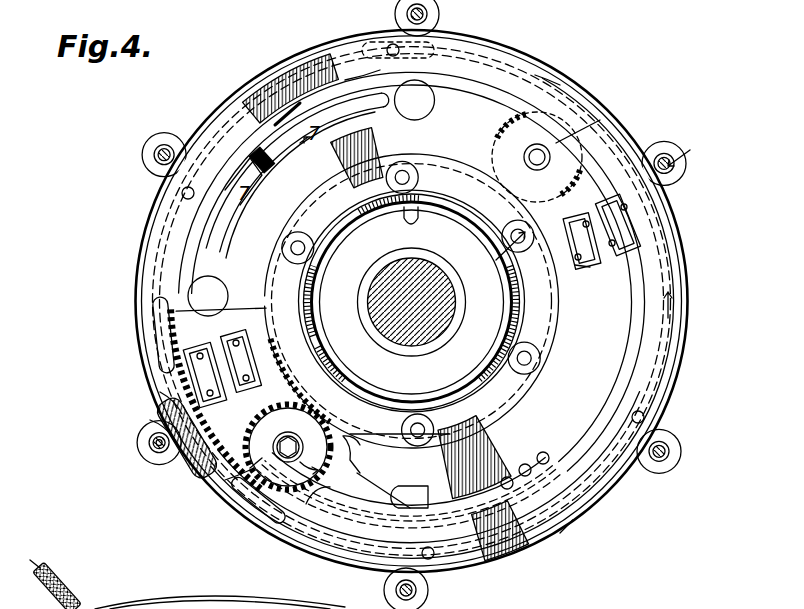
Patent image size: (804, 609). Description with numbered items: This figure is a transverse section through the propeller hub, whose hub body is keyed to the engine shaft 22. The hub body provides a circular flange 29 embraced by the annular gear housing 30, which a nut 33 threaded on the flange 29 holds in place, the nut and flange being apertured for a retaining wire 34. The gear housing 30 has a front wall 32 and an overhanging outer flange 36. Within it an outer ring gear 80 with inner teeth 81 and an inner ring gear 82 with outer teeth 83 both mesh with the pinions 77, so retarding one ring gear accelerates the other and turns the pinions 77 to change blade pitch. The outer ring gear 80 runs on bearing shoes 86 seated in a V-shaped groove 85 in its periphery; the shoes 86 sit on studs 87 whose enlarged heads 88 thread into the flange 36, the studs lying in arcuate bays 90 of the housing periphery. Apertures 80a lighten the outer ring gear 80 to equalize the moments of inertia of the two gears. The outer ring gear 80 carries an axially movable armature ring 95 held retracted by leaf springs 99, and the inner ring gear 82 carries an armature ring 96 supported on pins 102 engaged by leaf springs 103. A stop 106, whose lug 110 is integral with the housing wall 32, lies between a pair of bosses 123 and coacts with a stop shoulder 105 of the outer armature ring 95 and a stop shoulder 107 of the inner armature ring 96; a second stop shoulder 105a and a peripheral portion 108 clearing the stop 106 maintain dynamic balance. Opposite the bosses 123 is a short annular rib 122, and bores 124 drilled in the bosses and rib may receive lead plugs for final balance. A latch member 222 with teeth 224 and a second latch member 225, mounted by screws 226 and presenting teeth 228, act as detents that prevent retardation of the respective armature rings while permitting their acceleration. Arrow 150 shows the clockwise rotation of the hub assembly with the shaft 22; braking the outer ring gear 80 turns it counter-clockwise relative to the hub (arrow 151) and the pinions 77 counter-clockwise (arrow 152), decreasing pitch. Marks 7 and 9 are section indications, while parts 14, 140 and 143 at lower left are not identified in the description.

The section indicator 7 is at (273, 163).
The pivot pin 9 is at (591, 208).
The support bar 14 is at (39, 564).
The shaft 22 is at (396, 286).
The circular flange 29 is at (326, 293).
The gear housing 30 is at (580, 539).
The front wall 32 is at (203, 328).
The nut 33 is at (437, 395).
The retaining wire 34 is at (418, 222).
The outer flange 36 is at (602, 505).
The pinions 77 is at (560, 142).
The outer ring gear 80 is at (198, 462).
The apertures 80a is at (165, 315).
The inner teeth 81 is at (326, 470).
The inner ring gear 82 is at (322, 389).
The outer teeth 83 is at (356, 456).
The groove 85 is at (166, 398).
The bearing shoes 86 is at (165, 422).
The studs 87 is at (156, 456).
The enlarged heads 88 is at (158, 150).
The arcuate bays 90 is at (662, 142).
The outer armature ring 95 is at (550, 95).
The inner armature ring 96 is at (522, 112).
The leaf springs 99 is at (378, 42).
The pins 102 is at (300, 240).
The leaf springs 103 is at (410, 121).
The stop shoulder 105 is at (252, 135).
The second stop shoulder 105a is at (558, 458).
The stop 106 is at (258, 148).
The stop shoulder 107 is at (432, 498).
The peripherally extending portion 108 is at (466, 80).
The lug 110 is at (246, 170).
The annular rib 122 is at (393, 510).
The bosses 123 is at (350, 85).
The bores 124 is at (544, 464).
The bracket 140 is at (60, 584).
The base arc 143 is at (98, 607).
The arrow 150 is at (446, 328).
The arrow 151 is at (661, 319).
The arrow 152 is at (262, 462).
The latch member 222 is at (190, 360).
The latch teeth 224 is at (192, 382).
The second latch member 225 is at (608, 270).
The screws 226 is at (589, 268).
The teeth 228 is at (244, 346).